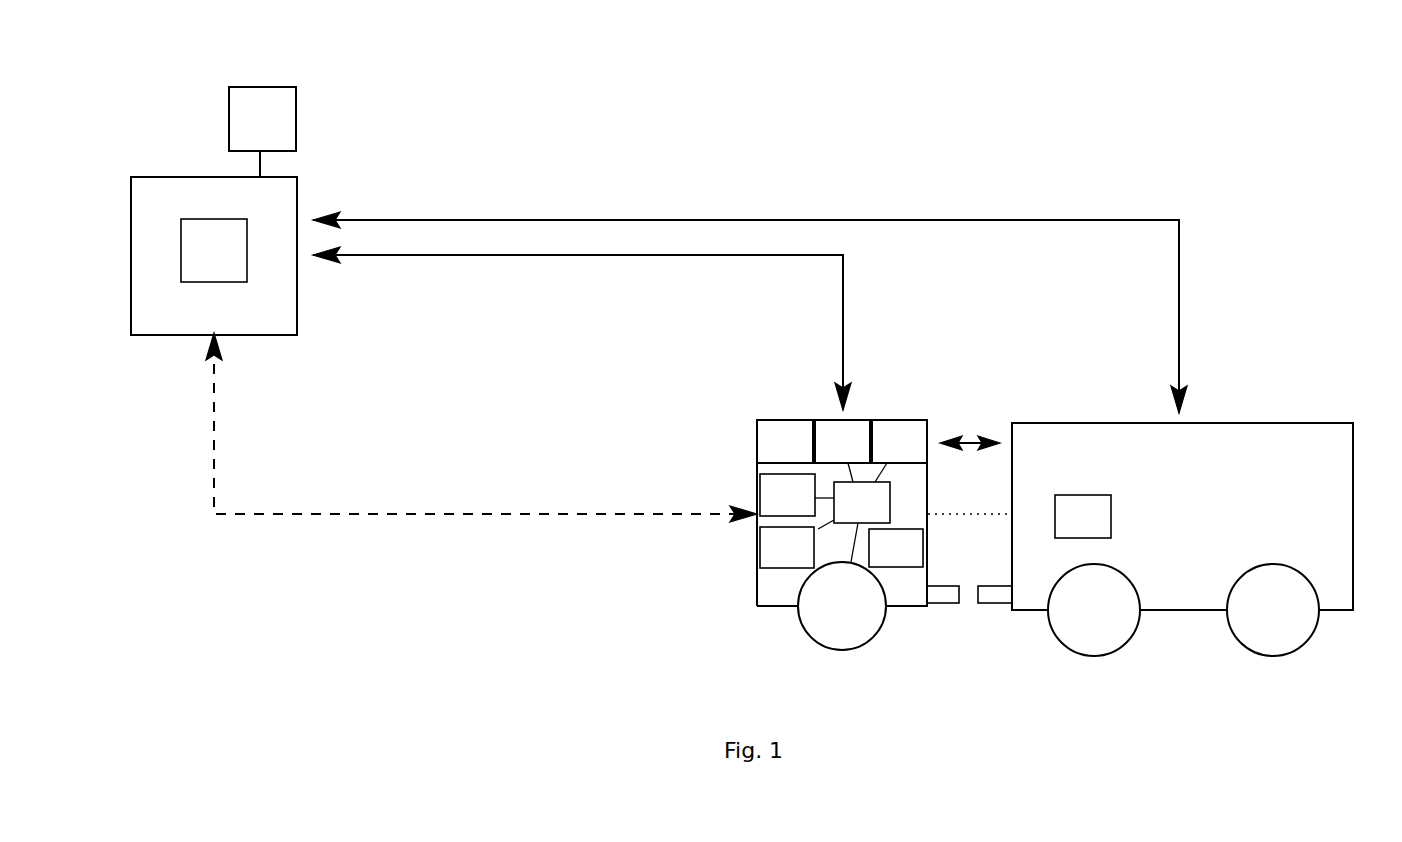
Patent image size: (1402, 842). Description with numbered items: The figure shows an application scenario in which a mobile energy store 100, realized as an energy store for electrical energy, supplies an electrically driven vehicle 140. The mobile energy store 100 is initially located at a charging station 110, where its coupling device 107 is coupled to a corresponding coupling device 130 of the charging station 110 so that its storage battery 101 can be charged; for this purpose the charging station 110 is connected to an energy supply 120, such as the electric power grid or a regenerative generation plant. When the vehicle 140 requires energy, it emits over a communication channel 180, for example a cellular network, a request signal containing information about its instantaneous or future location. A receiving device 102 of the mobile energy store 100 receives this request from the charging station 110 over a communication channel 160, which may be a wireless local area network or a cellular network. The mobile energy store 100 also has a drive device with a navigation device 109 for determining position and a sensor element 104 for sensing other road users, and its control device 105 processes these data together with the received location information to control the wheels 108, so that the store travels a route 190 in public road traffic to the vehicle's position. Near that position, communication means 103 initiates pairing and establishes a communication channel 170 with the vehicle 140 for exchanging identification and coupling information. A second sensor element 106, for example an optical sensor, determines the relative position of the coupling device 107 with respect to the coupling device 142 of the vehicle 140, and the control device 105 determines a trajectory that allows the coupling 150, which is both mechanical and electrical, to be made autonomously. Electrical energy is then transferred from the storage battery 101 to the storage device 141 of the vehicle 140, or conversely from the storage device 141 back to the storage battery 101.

The mobile energy store 100 is at (757, 611).
The storage battery 101 is at (785, 441).
The receiving device 102 is at (842, 441).
The communication means 103 is at (899, 441).
The sensor element 104 is at (797, 495).
The control device 105 is at (854, 512).
The second sensor element 106 is at (896, 548).
The coupling device 107 is at (943, 607).
The wheels 108 is at (848, 653).
The navigation device 109 is at (787, 547).
The charging station 110 is at (170, 341).
The energy supply 120 is at (254, 75).
The coupling device 130 is at (214, 250).
The electrically driven vehicle 140 is at (1324, 408).
The storage device 141 is at (1083, 516).
The coupling device 142 is at (995, 607).
The coupling 150 is at (950, 522).
The communication channel 160 is at (610, 263).
The communication channel 170 is at (971, 421).
The communication channel 180 is at (1022, 223).
The route 190 is at (387, 523).